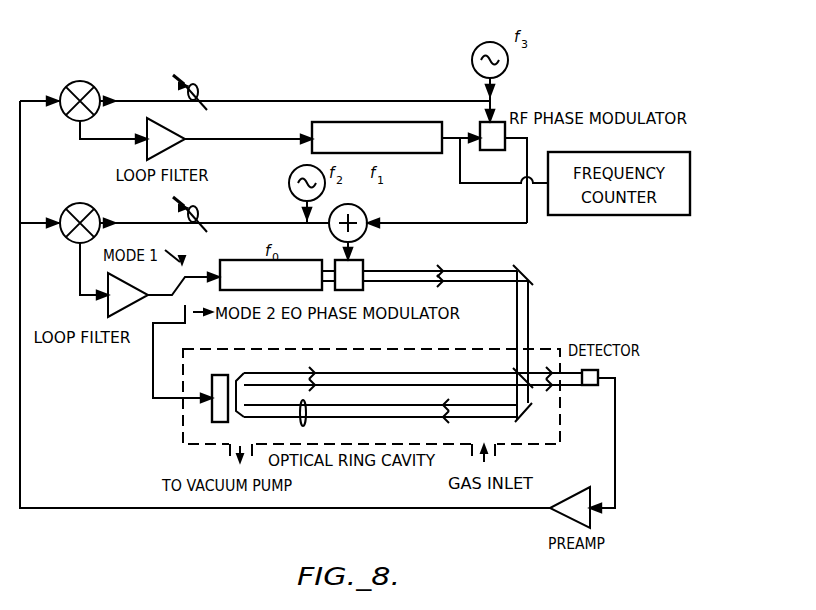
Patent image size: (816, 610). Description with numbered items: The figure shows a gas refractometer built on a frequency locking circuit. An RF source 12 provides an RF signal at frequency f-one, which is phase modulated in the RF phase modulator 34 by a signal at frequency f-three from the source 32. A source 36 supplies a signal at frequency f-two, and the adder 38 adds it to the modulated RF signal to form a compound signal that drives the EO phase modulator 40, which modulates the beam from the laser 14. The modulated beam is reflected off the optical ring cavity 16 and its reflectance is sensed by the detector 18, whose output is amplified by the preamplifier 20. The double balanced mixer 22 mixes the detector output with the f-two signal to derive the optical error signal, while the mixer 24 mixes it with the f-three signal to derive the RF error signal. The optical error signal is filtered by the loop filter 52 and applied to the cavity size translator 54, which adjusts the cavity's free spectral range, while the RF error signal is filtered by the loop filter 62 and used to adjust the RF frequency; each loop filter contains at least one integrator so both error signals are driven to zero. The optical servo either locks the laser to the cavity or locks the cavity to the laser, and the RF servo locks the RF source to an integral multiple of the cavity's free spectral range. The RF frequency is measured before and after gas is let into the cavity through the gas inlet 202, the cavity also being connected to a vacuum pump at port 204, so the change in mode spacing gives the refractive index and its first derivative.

The RF source 12 is at (445, 125).
The laser 14 is at (293, 260).
The optical ring cavity 16 is at (401, 373).
The detector 18 is at (590, 386).
The preamplifier 20 is at (596, 518).
The double balanced mixer 22 is at (100, 202).
The mixer 24 is at (100, 80).
The source 32 is at (509, 62).
The RF phase modulator 34 is at (486, 152).
The source 36 is at (296, 172).
The adder 38 is at (366, 213).
The EO phase modulator 40 is at (364, 262).
The loop filter 52 is at (108, 309).
The cavity size translator 54 is at (214, 375).
The loop filter 62 is at (170, 131).
The gas inlet 202 is at (497, 456).
The vacuum pump port 204 is at (228, 452).